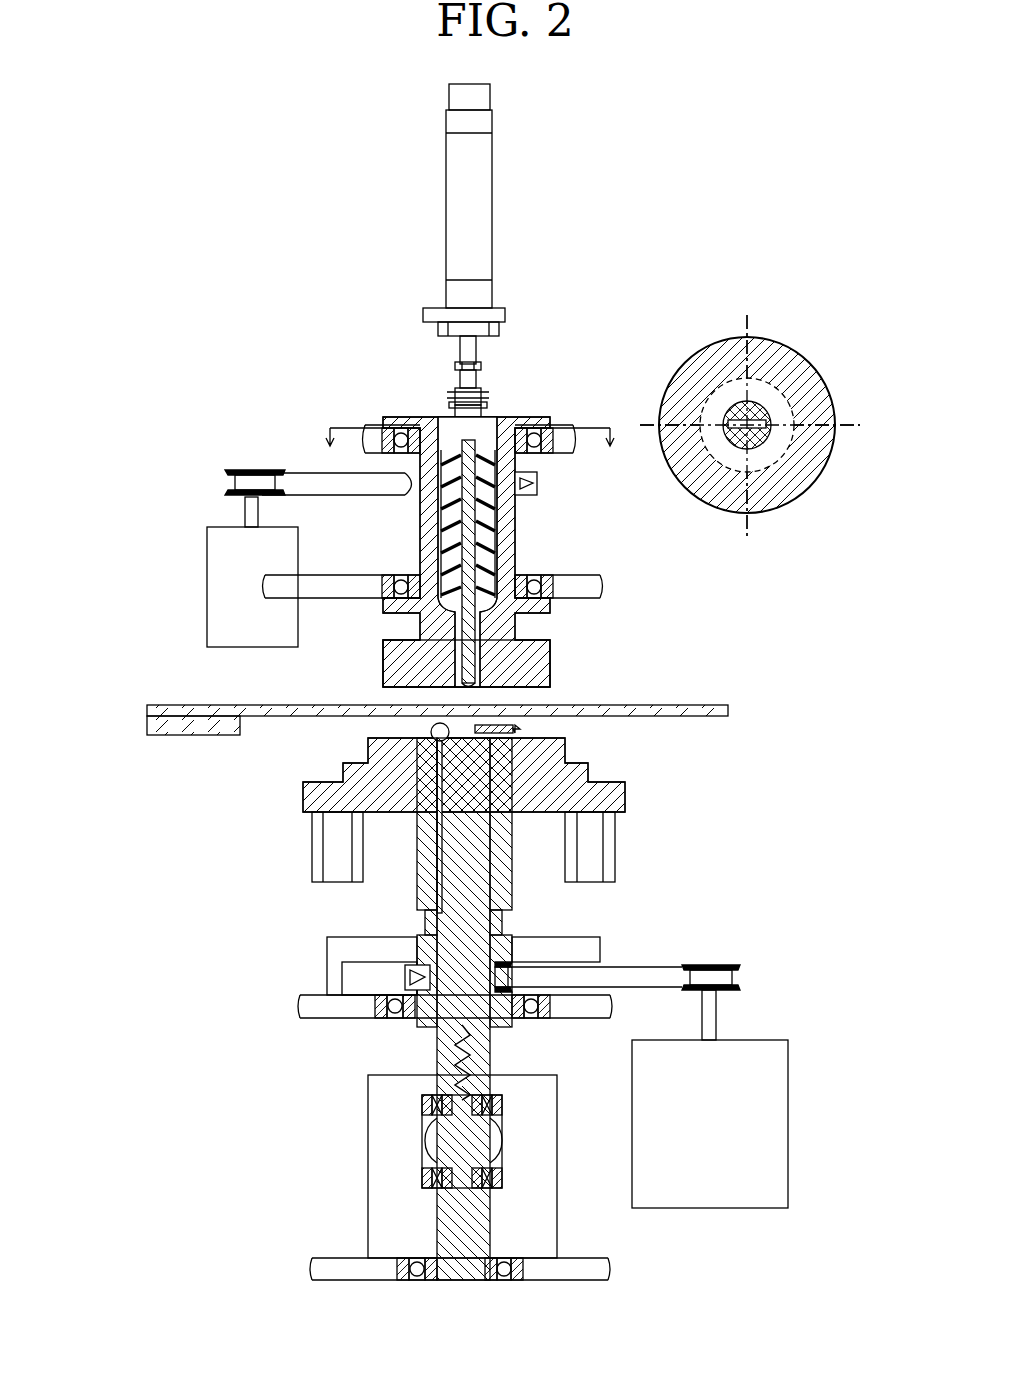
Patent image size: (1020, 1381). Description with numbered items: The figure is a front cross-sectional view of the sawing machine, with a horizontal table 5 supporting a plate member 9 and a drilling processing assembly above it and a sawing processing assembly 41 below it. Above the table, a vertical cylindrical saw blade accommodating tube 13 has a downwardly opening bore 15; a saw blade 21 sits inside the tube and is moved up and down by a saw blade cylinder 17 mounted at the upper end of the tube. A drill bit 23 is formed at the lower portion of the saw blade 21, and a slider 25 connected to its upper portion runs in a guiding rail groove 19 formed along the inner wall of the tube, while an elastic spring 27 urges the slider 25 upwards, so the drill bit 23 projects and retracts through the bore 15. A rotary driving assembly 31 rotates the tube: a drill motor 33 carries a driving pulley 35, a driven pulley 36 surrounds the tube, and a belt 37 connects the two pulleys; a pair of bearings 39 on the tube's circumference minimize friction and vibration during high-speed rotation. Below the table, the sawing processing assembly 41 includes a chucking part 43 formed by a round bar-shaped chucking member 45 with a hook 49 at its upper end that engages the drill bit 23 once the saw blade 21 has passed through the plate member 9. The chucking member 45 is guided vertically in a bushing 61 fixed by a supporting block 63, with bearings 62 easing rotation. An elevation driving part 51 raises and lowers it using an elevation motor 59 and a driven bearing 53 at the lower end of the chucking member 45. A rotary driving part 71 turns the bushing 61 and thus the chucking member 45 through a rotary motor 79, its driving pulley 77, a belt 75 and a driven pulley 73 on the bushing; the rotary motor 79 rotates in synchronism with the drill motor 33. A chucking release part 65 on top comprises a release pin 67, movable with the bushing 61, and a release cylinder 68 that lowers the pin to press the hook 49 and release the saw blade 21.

The table 5 is at (190, 735).
The plate member 9 is at (165, 705).
The saw blade accommodating tube 13 is at (515, 500).
The bore 15 is at (445, 655).
The saw blade cylinder 17 is at (490, 198).
The guiding rail groove 19 is at (440, 425).
The saw blade 21 is at (440, 548).
The drill bit 23 is at (470, 687).
The slider 25 is at (492, 412).
The elastic spring 27 is at (485, 560).
The rotary driving assembly 31 is at (277, 492).
The drill motor 33 is at (210, 530).
The driving pulley 35 is at (225, 470).
The driven pulley 36 is at (333, 444).
The belt 37 is at (405, 470).
The bearings 39 is at (545, 422).
The sawing processing assembly 41 is at (434, 1001).
The chucking part 43 is at (458, 875).
The chucking member 45 is at (440, 930).
The hook 49 is at (437, 800).
The elevation driving part 51 is at (379, 1166).
The driven bearing 53 is at (424, 1140).
The elevation motor 59 is at (380, 1103).
The bushing 61 is at (512, 895).
The bearings 62 is at (535, 1020).
The supporting block 63 is at (310, 1000).
The chucking release part 65 is at (487, 808).
The release pin 67 is at (520, 729).
The release cylinder 68 is at (318, 838).
The rotary driving part 71 is at (645, 1023).
The driven pulley 73 is at (512, 945).
The belt 75 is at (660, 975).
The driving pulley 77 is at (710, 968).
The rotary motor 79 is at (640, 885).